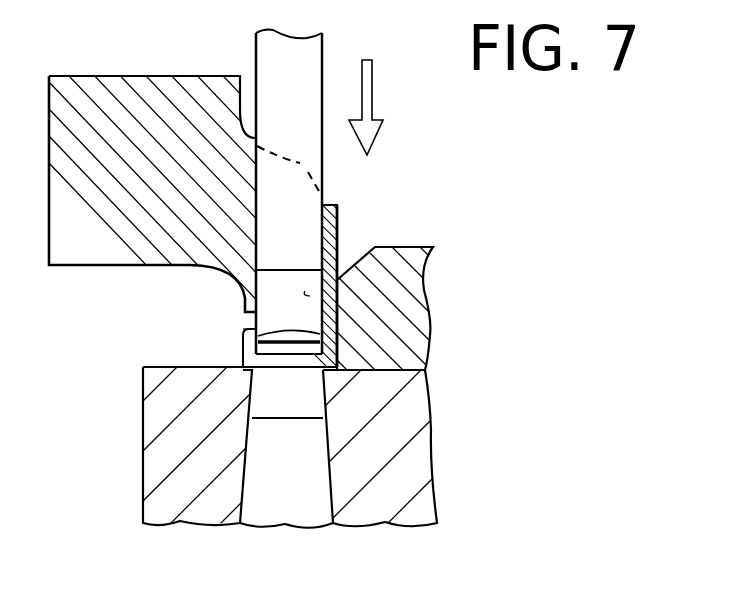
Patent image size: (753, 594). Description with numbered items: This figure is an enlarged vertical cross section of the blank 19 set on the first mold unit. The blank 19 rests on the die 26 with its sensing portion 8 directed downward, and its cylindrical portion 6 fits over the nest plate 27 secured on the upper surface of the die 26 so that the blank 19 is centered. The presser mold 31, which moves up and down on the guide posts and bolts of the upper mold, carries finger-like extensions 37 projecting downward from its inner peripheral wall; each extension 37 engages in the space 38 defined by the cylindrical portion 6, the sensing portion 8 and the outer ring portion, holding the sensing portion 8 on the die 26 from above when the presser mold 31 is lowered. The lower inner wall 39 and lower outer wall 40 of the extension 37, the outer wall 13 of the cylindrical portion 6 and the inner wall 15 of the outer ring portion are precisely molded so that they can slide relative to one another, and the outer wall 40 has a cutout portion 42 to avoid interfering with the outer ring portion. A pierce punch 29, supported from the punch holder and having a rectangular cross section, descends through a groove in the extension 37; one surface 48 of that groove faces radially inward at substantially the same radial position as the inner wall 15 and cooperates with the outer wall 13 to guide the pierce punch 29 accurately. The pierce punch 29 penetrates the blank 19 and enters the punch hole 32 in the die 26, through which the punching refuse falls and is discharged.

The presser mold 31 is at (88, 100).
The pierce punch 29 is at (270, 62).
The finger-like extension 37 is at (302, 165).
The surface of groove 48 is at (259, 208).
The blank 19 is at (340, 214).
The cylindrical portion 6 is at (330, 248).
The outer wall of cylindrical portion 13 is at (310, 296).
The nest plate 27 is at (410, 304).
The lower inner wall of extension 39 is at (345, 317).
The inner wall of outer ring portion 15 is at (337, 335).
The punch hole 32 is at (315, 392).
The die 26 is at (167, 447).
The sensing portion 8 is at (280, 373).
The lower outer wall of extension 40 is at (250, 318).
The cutout portion 42 is at (242, 325).
The space 38 is at (240, 356).